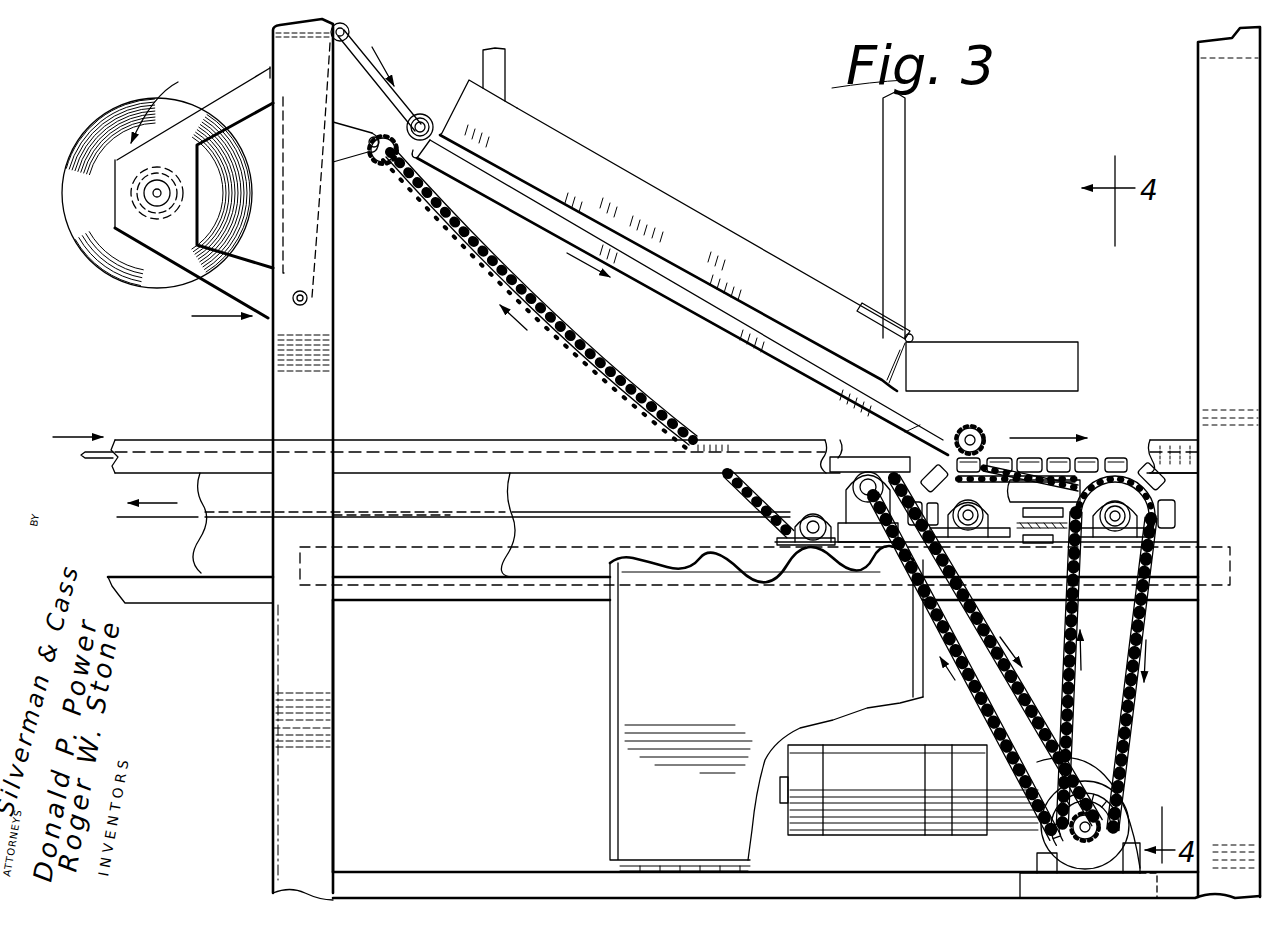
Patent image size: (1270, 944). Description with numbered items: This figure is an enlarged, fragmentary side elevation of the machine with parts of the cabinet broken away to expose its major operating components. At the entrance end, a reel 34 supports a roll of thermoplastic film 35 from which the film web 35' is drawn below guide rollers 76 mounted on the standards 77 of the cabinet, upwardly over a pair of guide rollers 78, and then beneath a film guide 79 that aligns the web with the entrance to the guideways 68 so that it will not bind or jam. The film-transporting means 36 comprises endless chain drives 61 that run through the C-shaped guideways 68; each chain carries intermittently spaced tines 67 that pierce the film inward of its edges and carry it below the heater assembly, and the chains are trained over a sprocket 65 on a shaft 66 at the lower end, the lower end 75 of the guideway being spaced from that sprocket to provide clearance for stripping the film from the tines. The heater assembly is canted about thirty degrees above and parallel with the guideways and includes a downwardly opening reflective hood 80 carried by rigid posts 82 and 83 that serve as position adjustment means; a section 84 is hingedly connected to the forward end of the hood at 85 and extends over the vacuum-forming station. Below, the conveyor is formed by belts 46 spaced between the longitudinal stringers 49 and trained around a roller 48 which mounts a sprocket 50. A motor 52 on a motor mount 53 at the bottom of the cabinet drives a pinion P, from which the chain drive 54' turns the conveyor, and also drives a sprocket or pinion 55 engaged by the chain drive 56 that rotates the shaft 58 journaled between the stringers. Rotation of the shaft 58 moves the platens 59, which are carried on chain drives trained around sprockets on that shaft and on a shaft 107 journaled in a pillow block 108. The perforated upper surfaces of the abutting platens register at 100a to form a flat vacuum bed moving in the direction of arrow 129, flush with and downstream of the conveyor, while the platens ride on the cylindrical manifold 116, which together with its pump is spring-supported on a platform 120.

The reel 34 is at (194, 185).
The roll of thermoplastic film 35 is at (136, 196).
The film web 35' is at (348, 168).
The film-transporting means 36 is at (706, 325).
The conveyor belts 46 is at (550, 515).
The roller 48 is at (913, 436).
The stringers 49 is at (163, 443).
The sprocket 50 is at (838, 486).
The motor 52 is at (888, 785).
The motor mount 53 is at (1017, 885).
The chain drive 54' is at (985, 657).
The sprocket or pinion 55 is at (1093, 798).
The chain drive 56 is at (1133, 727).
The shaft 58 is at (1132, 517).
The platens 59 is at (1090, 453).
The chain drive 61 is at (580, 352).
The sprocket 65 is at (963, 430).
The shaft 66 is at (982, 432).
The tines 67 is at (446, 230).
The guideways 68 is at (810, 367).
The lower end of guideway 75 is at (903, 452).
The guide rollers 76 is at (308, 297).
The standards 77 is at (300, 352).
The guide rollers 78 is at (350, 29).
The film guide 79 is at (413, 116).
The hood 80 is at (740, 265).
The post 82 is at (507, 75).
The post 83 is at (893, 205).
The hood section 84 is at (1015, 355).
The hinge connection 85 is at (915, 335).
The vacuum bed 100a is at (1062, 450).
The shaft 107 is at (962, 533).
The pillow block 108 is at (993, 518).
The manifold 116 is at (1044, 511).
The platform 120 is at (1065, 527).
The arrow 129 is at (1027, 437).
The pinion P is at (1117, 813).